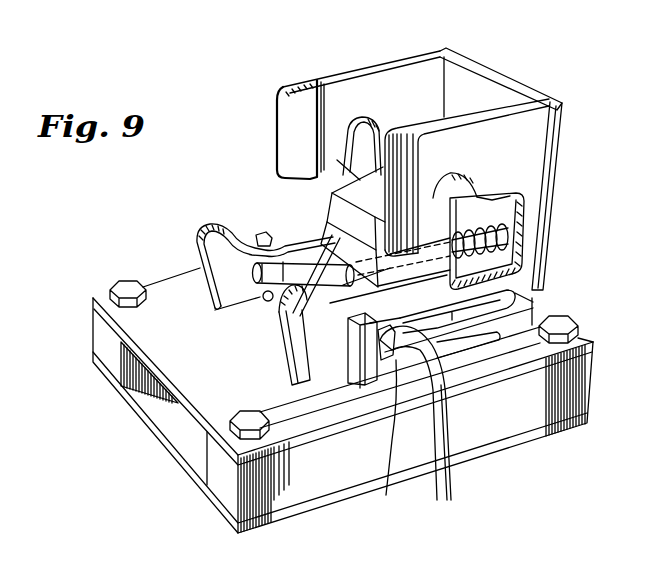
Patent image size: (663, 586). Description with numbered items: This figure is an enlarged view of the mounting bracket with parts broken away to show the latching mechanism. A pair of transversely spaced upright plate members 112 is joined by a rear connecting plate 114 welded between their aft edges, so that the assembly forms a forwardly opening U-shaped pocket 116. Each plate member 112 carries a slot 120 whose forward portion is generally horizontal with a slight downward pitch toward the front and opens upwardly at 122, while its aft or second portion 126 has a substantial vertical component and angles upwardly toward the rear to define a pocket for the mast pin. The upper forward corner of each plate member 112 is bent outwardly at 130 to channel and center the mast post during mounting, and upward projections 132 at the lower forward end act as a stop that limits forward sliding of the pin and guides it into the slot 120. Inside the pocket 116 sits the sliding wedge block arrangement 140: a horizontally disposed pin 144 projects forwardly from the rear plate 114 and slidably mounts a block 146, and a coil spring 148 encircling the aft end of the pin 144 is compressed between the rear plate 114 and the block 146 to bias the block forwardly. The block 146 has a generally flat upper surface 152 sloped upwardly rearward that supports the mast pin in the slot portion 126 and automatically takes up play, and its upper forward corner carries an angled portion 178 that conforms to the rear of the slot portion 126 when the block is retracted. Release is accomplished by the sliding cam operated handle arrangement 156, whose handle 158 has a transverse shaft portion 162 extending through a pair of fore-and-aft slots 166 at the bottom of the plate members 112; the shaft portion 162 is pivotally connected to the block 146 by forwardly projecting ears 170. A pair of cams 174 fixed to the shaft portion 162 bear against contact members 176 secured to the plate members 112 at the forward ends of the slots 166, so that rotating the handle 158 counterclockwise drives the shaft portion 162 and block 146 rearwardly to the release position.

The upright plate members 112 is at (412, 77).
The rear connecting plate 114 is at (490, 88).
The U-shaped pocket 116 is at (267, 166).
The slot 120 is at (407, 160).
The upward opening of slot 122 is at (237, 281).
The aft or second portion of slot 126 is at (450, 183).
The outwardly bent portion 130 is at (388, 133).
The upward projections 132 is at (210, 236).
The sliding wedge block arrangement 140 is at (520, 208).
The pin 144 is at (264, 300).
The block 146 is at (487, 197).
The coil spring 148 is at (520, 264).
The upper surface of block 152 is at (357, 183).
The sliding cam operated handle arrangement 156 is at (442, 372).
The handle 158 is at (457, 477).
The transverse shaft portion 162 is at (395, 352).
The fore-and-aft extending slots 166 is at (268, 218).
The forwardly projecting ears 170 is at (327, 273).
The cams 174 is at (395, 493).
The contact members 176 is at (357, 363).
The angled portion 178 is at (343, 215).